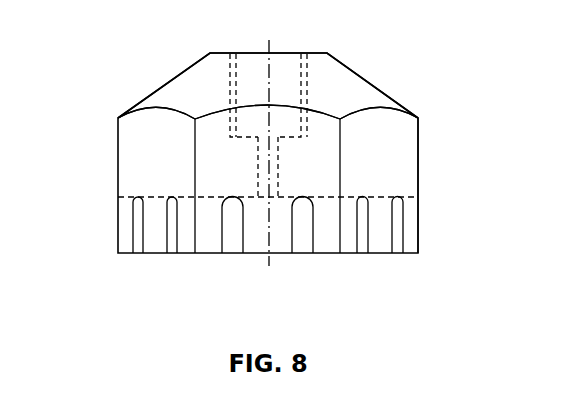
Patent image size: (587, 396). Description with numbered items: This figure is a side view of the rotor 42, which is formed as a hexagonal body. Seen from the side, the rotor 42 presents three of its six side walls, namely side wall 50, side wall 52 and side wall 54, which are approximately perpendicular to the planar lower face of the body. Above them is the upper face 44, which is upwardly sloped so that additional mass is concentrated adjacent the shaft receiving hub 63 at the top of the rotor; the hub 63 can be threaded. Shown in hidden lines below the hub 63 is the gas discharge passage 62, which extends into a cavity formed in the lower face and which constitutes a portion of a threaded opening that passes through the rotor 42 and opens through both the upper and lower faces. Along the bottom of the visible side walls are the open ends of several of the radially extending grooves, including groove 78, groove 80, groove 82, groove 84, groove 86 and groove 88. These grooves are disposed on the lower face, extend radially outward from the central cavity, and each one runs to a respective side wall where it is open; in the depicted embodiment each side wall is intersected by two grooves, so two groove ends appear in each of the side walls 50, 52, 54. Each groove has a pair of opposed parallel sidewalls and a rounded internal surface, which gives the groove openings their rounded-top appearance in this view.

The rotor 42 is at (84, 153).
The upper face 44 is at (179, 64).
The side wall 50 is at (141, 163).
The side wall 52 is at (218, 187).
The side wall 54 is at (404, 123).
The gas discharge passage 62 is at (268, 168).
The shaft receiving hub 63 is at (287, 67).
The groove 78 is at (395, 253).
The groove 80 is at (362, 253).
The groove 82 is at (297, 253).
The groove 84 is at (230, 253).
The groove 86 is at (172, 253).
The groove 88 is at (137, 253).